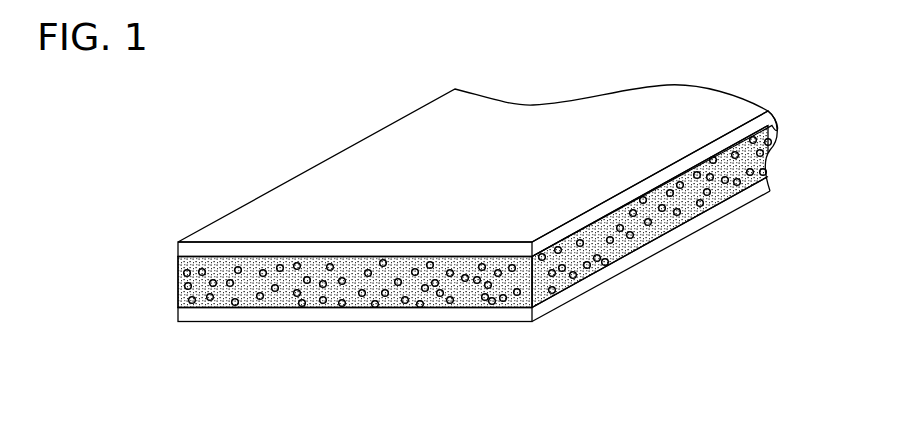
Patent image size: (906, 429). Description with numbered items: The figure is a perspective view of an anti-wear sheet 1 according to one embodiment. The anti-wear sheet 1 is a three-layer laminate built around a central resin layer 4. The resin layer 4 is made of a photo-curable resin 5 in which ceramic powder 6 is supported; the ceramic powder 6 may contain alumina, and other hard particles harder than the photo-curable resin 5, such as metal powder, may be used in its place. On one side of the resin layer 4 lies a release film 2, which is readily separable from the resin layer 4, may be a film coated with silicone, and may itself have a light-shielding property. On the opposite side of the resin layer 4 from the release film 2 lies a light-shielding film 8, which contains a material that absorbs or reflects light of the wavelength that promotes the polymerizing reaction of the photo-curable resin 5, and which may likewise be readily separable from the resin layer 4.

The anti-wear sheet 1 is at (260, 89).
The release film 2 is at (227, 322).
The resin layer 4 is at (431, 224).
The photo-curable resin 5 is at (187, 273).
The ceramic powder 6 is at (187, 295).
The light-shielding film 8 is at (240, 224).